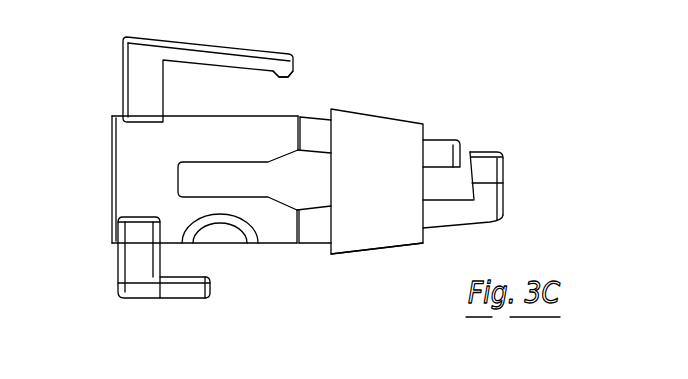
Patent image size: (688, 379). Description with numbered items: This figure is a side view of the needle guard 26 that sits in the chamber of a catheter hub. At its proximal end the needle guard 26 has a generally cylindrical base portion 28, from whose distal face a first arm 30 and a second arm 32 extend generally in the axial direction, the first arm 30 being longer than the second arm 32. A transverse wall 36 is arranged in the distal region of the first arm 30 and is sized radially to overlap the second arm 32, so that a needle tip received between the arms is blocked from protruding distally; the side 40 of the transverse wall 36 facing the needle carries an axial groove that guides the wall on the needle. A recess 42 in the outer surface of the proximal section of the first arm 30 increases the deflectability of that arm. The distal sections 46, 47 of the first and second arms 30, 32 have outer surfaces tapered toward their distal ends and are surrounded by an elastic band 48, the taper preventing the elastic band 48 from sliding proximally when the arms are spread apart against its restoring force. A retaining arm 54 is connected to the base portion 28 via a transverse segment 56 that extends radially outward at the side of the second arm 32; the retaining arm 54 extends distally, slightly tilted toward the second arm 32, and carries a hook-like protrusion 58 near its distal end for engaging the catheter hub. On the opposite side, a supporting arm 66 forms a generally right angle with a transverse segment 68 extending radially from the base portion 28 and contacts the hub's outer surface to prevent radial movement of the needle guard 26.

The needle guard 26 is at (411, 74).
The base portion 28 is at (131, 149).
The first arm 30 is at (282, 243).
The second arm 32 is at (445, 138).
The transverse wall 36 is at (503, 173).
The side of transverse wall facing the needle 40 is at (483, 151).
The recess 42 is at (232, 228).
The distal section of the first arm 46 is at (315, 247).
The distal section of the second arm 47 is at (320, 118).
The elastic band 48 is at (378, 253).
The retaining arm 54 is at (168, 70).
The transverse segment 56 is at (124, 88).
The hook-like protrusion 58 is at (276, 78).
The supporting arm 66 is at (190, 300).
The transverse segment 68 is at (119, 263).